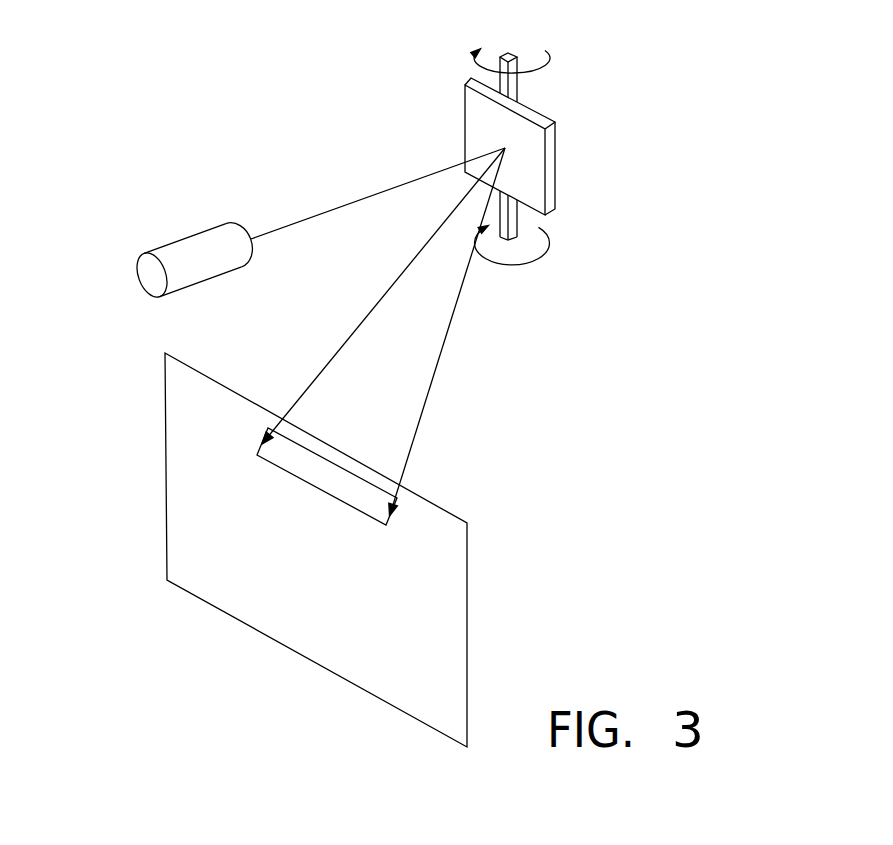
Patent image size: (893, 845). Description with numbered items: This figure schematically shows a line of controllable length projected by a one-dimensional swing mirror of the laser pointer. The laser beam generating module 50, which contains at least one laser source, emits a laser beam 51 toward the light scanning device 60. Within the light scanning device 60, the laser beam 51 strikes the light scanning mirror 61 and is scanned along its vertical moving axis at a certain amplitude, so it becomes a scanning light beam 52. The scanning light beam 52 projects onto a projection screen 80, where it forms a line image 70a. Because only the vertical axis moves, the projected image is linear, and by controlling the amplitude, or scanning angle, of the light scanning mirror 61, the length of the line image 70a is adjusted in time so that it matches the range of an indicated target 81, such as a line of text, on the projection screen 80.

The laser beam generating module 50 is at (193, 250).
The laser beam 51 is at (360, 201).
The scanning light beam 52 is at (452, 317).
The light scanning device 60 is at (608, 157).
The light scanning mirror 61 is at (533, 157).
The line image 70a is at (255, 466).
The projection screen 80 is at (467, 592).
The indicated target 81 is at (348, 478).